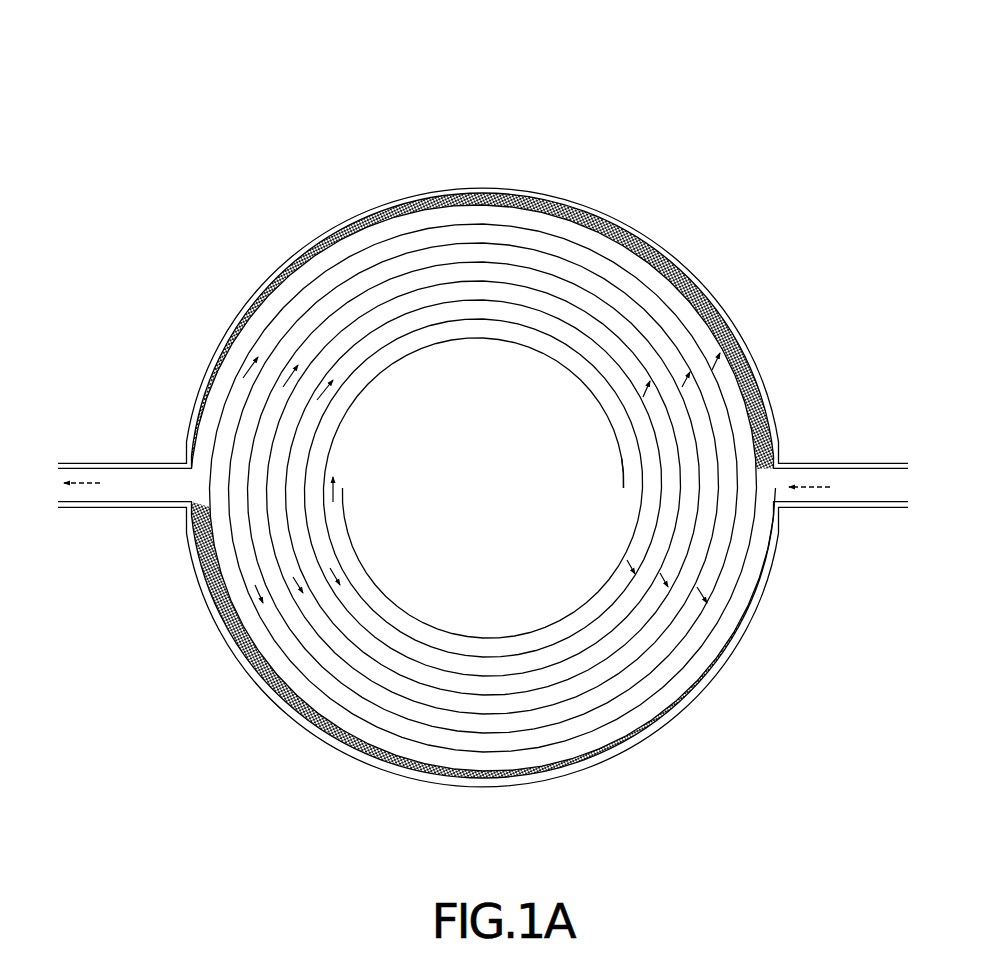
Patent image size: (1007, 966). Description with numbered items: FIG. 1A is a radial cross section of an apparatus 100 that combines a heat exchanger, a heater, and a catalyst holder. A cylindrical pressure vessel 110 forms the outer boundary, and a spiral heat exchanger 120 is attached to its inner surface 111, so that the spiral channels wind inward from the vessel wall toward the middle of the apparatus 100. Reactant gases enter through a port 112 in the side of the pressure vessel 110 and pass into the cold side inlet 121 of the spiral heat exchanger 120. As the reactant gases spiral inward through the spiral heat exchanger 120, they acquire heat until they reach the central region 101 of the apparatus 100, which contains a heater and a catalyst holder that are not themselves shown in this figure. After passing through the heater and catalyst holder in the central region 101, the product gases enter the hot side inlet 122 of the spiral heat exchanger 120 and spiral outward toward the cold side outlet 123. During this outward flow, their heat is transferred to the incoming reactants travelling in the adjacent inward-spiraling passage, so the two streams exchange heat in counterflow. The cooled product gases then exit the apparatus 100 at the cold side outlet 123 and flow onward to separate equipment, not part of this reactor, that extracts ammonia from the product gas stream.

The apparatus 100 is at (489, 400).
The central region 101 is at (420, 405).
The cylindrical pressure vessel 110 is at (683, 710).
The inner surface 111 is at (197, 387).
The port 112 is at (887, 500).
The spiral heat exchanger 120 is at (625, 290).
The cold side inlet 121 is at (782, 495).
The hot side inlet 122 is at (635, 478).
The cold side outlet 123 is at (183, 490).